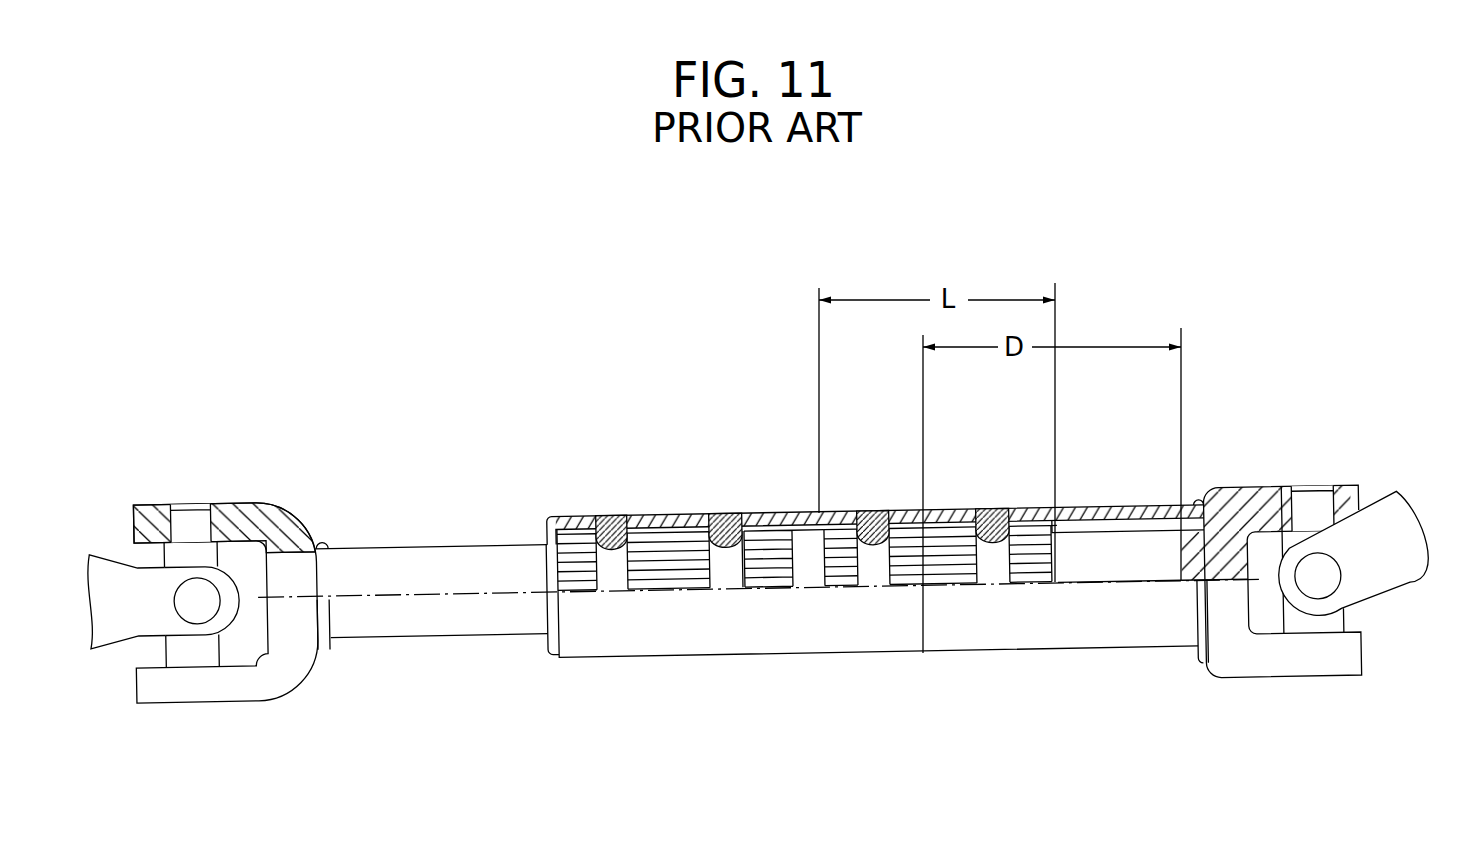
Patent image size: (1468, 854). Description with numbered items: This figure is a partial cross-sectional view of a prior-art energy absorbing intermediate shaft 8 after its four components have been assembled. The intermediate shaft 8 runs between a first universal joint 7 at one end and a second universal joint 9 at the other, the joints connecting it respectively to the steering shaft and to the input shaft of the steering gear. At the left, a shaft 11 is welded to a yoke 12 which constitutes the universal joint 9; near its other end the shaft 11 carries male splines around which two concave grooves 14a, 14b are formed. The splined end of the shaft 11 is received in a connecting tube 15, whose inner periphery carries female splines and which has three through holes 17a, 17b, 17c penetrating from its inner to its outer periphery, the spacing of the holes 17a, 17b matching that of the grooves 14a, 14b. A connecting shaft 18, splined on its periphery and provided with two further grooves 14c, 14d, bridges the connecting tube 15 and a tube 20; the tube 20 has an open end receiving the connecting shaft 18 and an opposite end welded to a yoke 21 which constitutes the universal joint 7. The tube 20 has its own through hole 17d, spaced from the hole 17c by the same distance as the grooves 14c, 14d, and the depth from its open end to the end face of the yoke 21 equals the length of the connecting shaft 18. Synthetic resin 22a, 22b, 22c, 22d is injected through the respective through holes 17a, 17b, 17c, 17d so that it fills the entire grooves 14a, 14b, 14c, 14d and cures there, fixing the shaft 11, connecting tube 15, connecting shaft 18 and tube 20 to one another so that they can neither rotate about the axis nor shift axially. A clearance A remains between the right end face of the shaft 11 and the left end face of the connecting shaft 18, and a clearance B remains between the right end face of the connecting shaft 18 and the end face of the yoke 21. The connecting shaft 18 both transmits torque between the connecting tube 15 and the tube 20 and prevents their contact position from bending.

The first universal joint 7 is at (1243, 500).
The intermediate shaft 8 is at (840, 441).
The second universal joint 9 is at (243, 515).
The shaft 11 is at (417, 560).
The yoke 12 is at (292, 663).
The concave groove 14a is at (622, 583).
The concave groove 14b is at (738, 582).
The groove 14c is at (885, 582).
The groove 14d is at (1005, 578).
The connecting tube 15 is at (665, 501).
The through hole 17a is at (612, 517).
The through hole 17b is at (727, 515).
The through hole 17c is at (870, 517).
The through hole 17d is at (995, 517).
The connecting shaft 18 is at (940, 553).
The tube 20 is at (1144, 660).
The yoke 21 is at (1287, 663).
The synthetic resin 22a is at (610, 550).
The synthetic resin 22b is at (725, 550).
The synthetic resin 22c is at (872, 547).
The synthetic resin 22d is at (995, 547).
The clearance A is at (807, 537).
The clearance B is at (1108, 547).